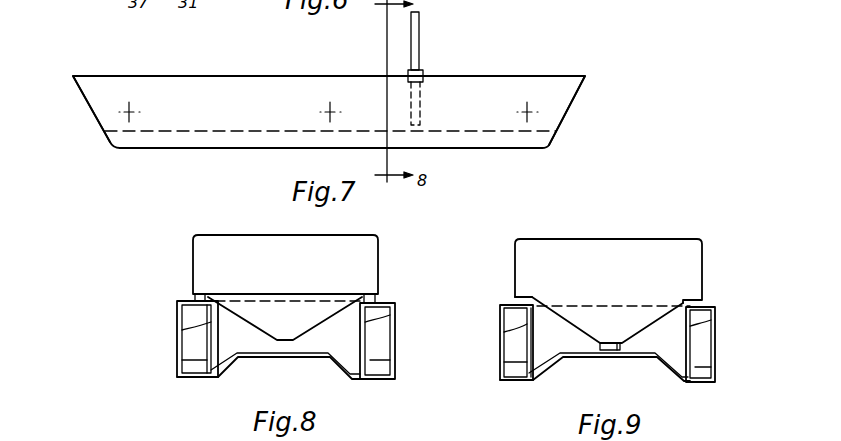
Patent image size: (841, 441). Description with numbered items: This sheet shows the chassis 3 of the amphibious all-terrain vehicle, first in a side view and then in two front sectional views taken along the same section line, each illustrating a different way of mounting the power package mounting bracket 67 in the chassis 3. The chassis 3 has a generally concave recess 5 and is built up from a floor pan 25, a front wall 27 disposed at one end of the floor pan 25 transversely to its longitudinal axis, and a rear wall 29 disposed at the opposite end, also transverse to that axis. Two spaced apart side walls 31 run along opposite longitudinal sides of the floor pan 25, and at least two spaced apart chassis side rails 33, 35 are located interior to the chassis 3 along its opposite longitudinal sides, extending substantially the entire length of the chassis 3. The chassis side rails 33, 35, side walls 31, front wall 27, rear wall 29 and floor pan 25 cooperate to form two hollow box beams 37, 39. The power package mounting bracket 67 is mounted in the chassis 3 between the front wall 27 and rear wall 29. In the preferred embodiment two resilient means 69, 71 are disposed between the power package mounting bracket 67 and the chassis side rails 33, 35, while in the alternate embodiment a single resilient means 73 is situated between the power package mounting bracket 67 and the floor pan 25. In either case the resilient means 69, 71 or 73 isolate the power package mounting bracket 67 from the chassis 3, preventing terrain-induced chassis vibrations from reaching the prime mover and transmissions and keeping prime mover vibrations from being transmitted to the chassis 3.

In FIG. 7, the chassis 3 is at (276, 76).
In FIG. 8, the chassis 3 is at (344, 343).
In FIG. 9, the chassis 3 is at (559, 343).
In FIG. 8, the concave recess 5 is at (310, 360).
In FIG. 9, the concave recess 5 is at (640, 362).
In FIG. 7, the floor pan 25 is at (185, 150).
In FIG. 8, the floor pan 25 is at (215, 383).
In FIG. 9, the floor pan 25 is at (530, 386).
In FIG. 7, the front wall 27 is at (99, 112).
In FIG. 7, the rear wall 29 is at (577, 118).
In FIG. 8, the side walls 31 is at (178, 345).
In FIG. 9, the side walls 31 is at (500, 346).
In FIG. 8, the chassis side rail 33 is at (378, 319).
In FIG. 9, the chassis side rail 33 is at (693, 326).
In FIG. 8, the chassis side rail 35 is at (190, 328).
In FIG. 9, the chassis side rail 35 is at (515, 330).
In FIG. 8, the hollow box beam 37 is at (200, 361).
In FIG. 9, the hollow box beam 37 is at (517, 363).
In FIG. 8, the hollow box beam 39 is at (378, 362).
In FIG. 9, the hollow box beam 39 is at (697, 368).
In FIG. 7, the power package mounting bracket 67 is at (420, 46).
In FIG. 8, the power package mounting bracket 67 is at (345, 248).
In FIG. 9, the power package mounting bracket 67 is at (663, 257).
In FIG. 8, the resilient means 69 is at (376, 303).
In FIG. 8, the resilient means 71 is at (196, 298).
In FIG. 9, the resilient means 73 is at (623, 347).